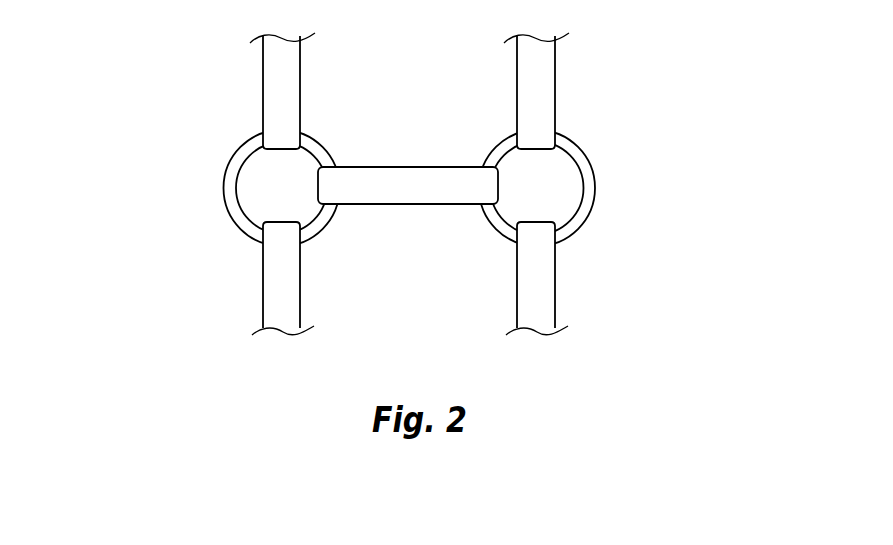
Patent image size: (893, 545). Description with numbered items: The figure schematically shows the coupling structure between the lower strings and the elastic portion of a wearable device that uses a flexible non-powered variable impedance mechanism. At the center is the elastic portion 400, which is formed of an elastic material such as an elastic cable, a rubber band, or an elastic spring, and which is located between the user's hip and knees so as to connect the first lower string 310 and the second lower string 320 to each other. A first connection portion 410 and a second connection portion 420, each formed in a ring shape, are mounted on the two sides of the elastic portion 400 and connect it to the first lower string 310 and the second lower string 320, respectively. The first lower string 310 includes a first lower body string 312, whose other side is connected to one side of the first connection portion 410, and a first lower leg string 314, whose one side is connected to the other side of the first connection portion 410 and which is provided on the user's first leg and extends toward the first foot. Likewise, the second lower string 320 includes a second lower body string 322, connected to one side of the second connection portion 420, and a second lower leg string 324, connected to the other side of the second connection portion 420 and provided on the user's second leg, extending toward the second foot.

The first lower string 310 is at (172, 184).
The (1-1)th lower string 312 is at (273, 95).
The (1-2)th lower string 314 is at (272, 277).
The second lower string 320 is at (648, 184).
The (2-1)th lower string 322 is at (542, 97).
The (2-2)th lower string 324 is at (609, 271).
The elastic portion 400 is at (418, 173).
The first connection portion 410 is at (321, 230).
The second connection portion 420 is at (497, 230).